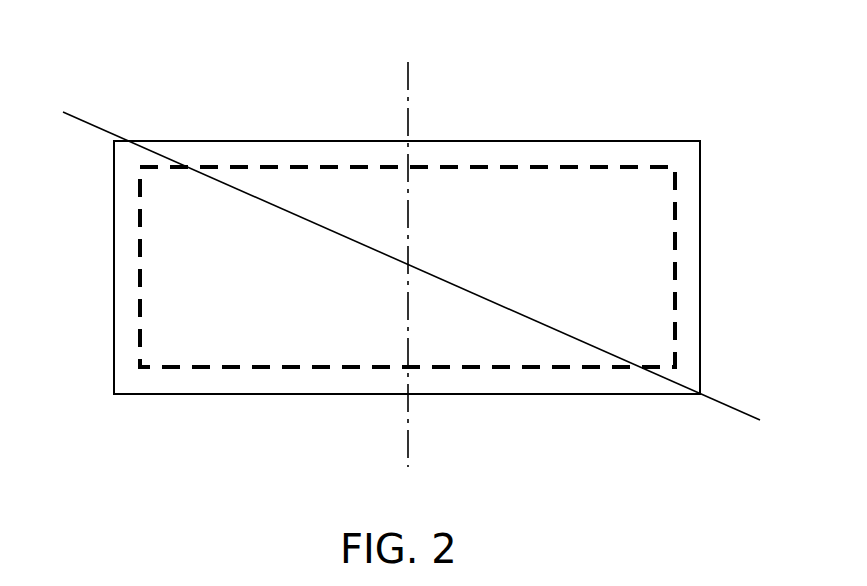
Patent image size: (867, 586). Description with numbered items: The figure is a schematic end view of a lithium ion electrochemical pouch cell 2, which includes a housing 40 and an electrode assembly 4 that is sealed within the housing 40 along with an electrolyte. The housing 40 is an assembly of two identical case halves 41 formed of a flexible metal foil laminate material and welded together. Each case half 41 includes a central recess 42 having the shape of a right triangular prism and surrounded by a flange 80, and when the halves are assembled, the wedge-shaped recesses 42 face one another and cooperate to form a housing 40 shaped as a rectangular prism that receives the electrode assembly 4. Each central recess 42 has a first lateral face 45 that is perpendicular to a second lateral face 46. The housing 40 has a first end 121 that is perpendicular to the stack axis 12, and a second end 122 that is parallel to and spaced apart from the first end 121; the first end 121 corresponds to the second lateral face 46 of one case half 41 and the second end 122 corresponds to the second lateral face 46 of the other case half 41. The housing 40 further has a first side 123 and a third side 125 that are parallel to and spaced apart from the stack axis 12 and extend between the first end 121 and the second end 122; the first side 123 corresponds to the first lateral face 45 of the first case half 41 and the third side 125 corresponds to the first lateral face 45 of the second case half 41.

The lithium ion electrochemical pouch cell 2 is at (231, 56).
The electrode assembly 4 is at (294, 165).
The stack axis 12 is at (408, 88).
The housing 40 is at (540, 141).
The case half 41 is at (563, 394).
The central recess 42 is at (696, 207).
The first lateral face 45 is at (700, 265).
The second lateral face 46 is at (203, 141).
The flange 80 is at (83, 121).
The first end 121 is at (488, 141).
The second end 122 is at (658, 394).
The first side 123 is at (700, 315).
The third side 125 is at (114, 262).